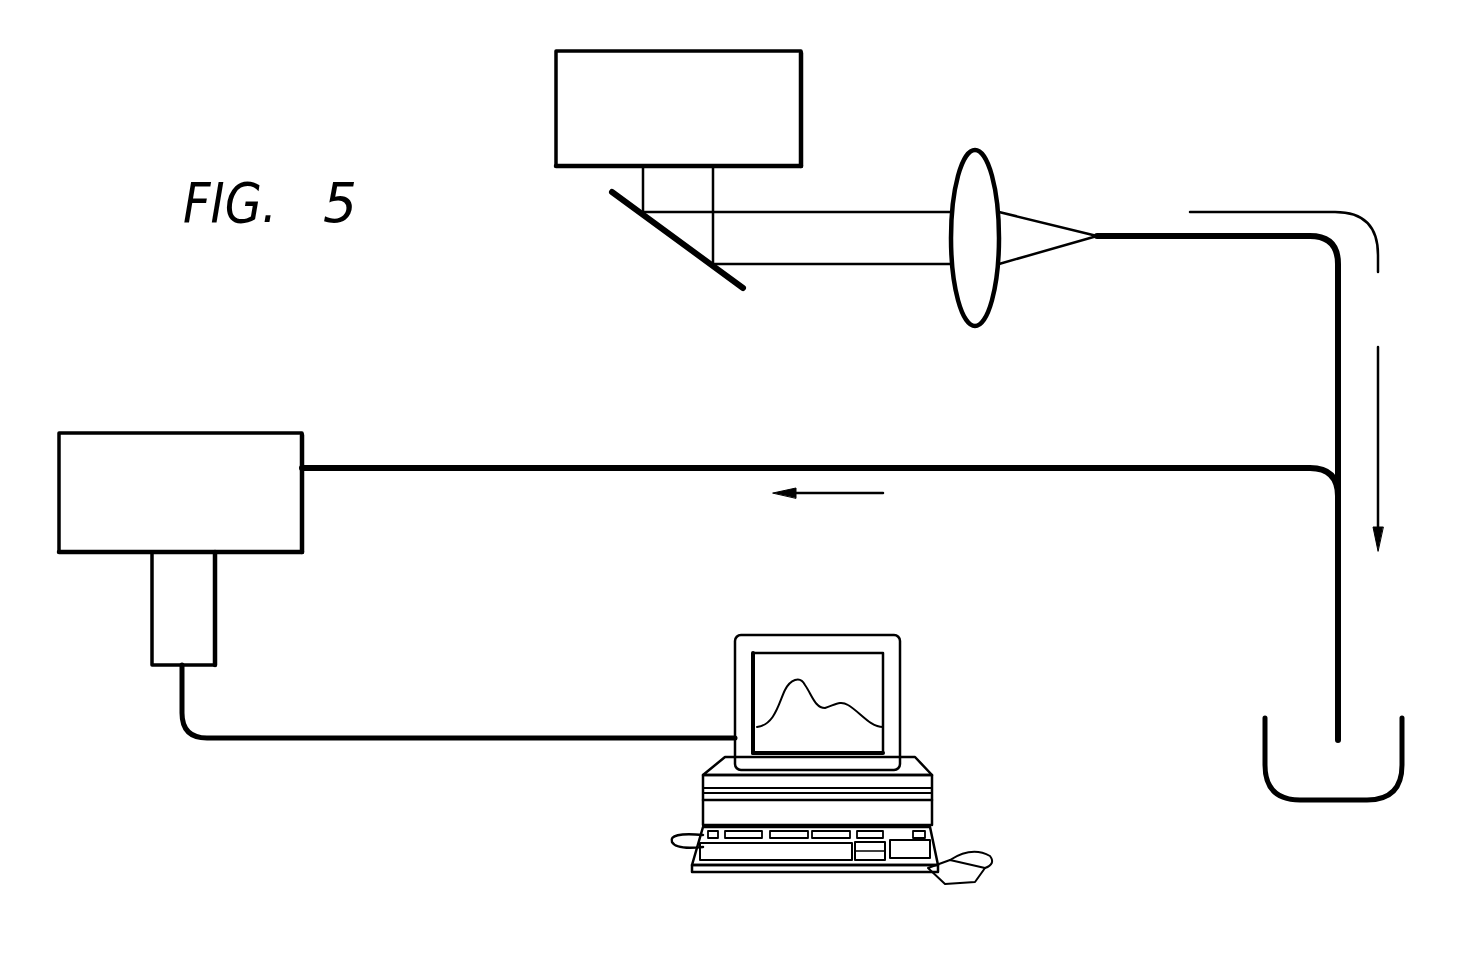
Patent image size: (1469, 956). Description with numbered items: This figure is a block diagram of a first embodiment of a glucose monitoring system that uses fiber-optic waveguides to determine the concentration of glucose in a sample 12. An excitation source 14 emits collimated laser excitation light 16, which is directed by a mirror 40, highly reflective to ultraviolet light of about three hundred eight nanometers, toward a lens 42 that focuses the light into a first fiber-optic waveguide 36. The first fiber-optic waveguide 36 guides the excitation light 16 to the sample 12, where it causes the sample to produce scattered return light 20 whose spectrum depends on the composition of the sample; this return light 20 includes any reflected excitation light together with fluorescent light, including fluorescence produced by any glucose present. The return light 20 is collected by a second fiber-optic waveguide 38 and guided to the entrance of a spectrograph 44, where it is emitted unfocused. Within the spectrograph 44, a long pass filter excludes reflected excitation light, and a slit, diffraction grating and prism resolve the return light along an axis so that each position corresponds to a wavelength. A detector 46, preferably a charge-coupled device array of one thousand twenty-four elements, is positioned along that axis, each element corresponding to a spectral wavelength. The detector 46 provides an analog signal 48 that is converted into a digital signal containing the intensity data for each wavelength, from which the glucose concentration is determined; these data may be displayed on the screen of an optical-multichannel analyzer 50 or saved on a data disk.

The sample 12 is at (1262, 745).
The excitation source 14 is at (801, 88).
The excitation light 16 is at (848, 266).
The return light 20 is at (983, 518).
The first fiber-optic waveguide 36 is at (1243, 240).
The second fiber-optic waveguide 38 is at (1063, 465).
The mirror 40 is at (682, 237).
The lens 42 is at (998, 290).
The spectrograph 44 is at (182, 431).
The detector 46 is at (215, 650).
The analog signal 48 is at (432, 736).
The optical-multichannel analyzer 50 is at (776, 633).